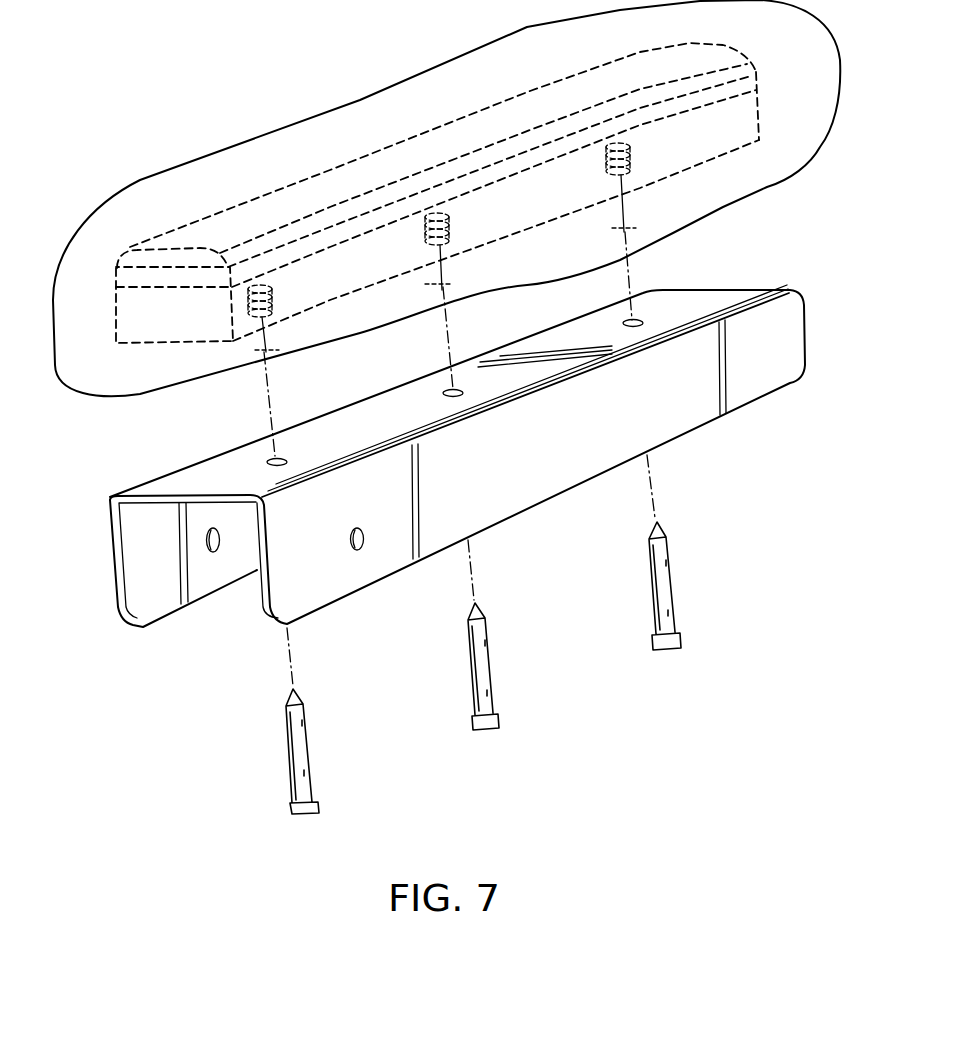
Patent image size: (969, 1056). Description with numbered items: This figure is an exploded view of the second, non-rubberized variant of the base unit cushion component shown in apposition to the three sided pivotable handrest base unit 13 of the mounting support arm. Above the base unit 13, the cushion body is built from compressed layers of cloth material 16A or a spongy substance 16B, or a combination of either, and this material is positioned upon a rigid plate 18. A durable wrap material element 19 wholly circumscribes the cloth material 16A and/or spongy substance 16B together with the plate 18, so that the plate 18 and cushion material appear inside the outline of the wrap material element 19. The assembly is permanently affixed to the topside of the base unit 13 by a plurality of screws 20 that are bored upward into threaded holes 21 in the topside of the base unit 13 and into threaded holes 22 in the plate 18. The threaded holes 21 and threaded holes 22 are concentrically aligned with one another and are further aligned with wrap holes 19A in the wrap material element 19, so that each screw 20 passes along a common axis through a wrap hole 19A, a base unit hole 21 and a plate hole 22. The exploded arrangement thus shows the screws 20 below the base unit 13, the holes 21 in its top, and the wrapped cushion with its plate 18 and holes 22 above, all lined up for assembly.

The pivotable handrest base unit 13 is at (748, 380).
The compressed layers of cloth material 16A is at (622, 78).
The spongy substance 16B is at (730, 82).
The rigid plate 18 is at (469, 190).
The wrap material element 19 is at (272, 150).
The wrap holes 19A is at (440, 284).
The screws 20 is at (670, 595).
The threaded holes 21 is at (282, 459).
The threaded holes 22 is at (425, 233).